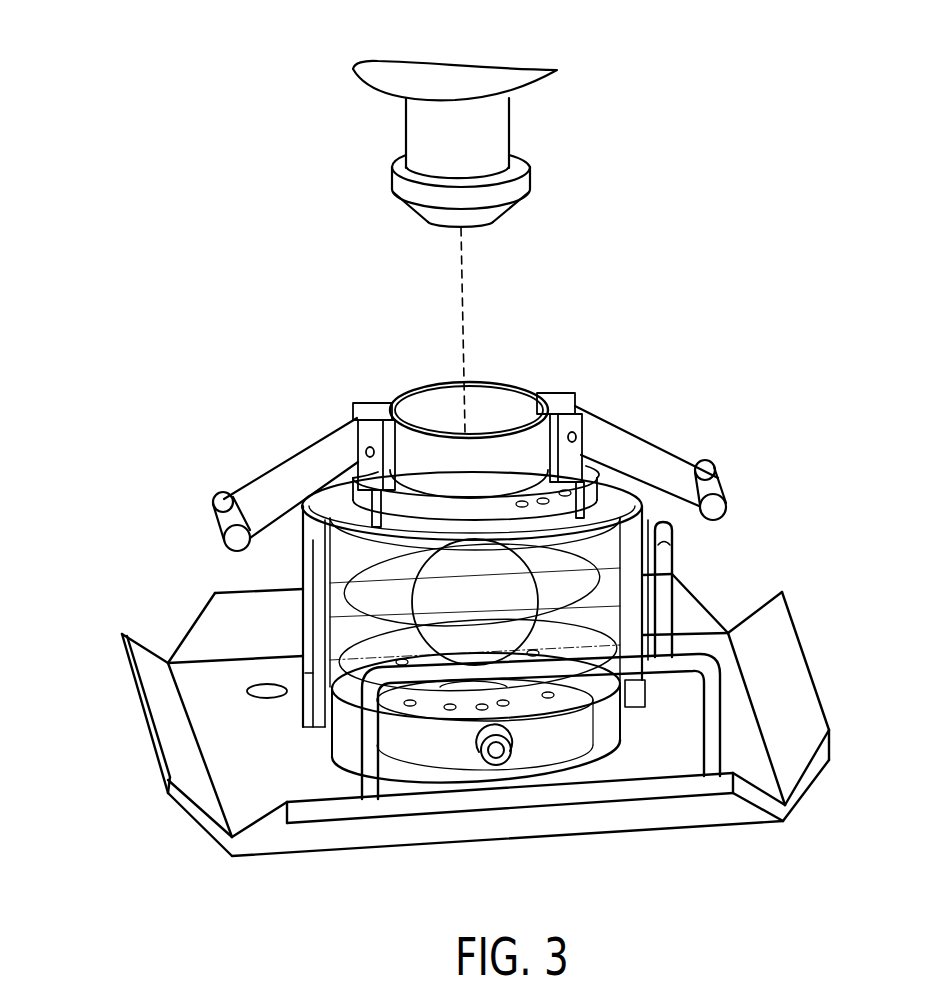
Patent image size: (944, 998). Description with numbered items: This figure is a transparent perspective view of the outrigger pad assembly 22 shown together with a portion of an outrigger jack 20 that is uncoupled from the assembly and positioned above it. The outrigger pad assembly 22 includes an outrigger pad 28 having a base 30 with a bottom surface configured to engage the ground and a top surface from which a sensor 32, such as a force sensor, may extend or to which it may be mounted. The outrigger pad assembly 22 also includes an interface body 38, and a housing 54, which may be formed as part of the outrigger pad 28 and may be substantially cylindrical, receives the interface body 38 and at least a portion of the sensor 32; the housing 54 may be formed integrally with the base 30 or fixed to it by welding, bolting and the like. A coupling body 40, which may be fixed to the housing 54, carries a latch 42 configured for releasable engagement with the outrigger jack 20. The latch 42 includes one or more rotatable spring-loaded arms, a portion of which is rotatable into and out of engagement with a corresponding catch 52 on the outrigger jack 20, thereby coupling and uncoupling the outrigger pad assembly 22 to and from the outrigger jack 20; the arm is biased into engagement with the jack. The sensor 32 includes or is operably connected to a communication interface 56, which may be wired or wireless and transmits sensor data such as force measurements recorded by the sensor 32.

The outrigger jack 20 is at (398, 72).
The catch 52 is at (500, 131).
The coupling body 40 is at (415, 450).
The latch 42 is at (650, 447).
The interface body 38 is at (334, 580).
The sensor 32 is at (507, 610).
The housing 54 is at (620, 620).
The outrigger pad assembly 22 is at (120, 740).
The base 30 is at (220, 693).
The outrigger pad 28 is at (808, 698).
The communication interface 56 is at (495, 758).